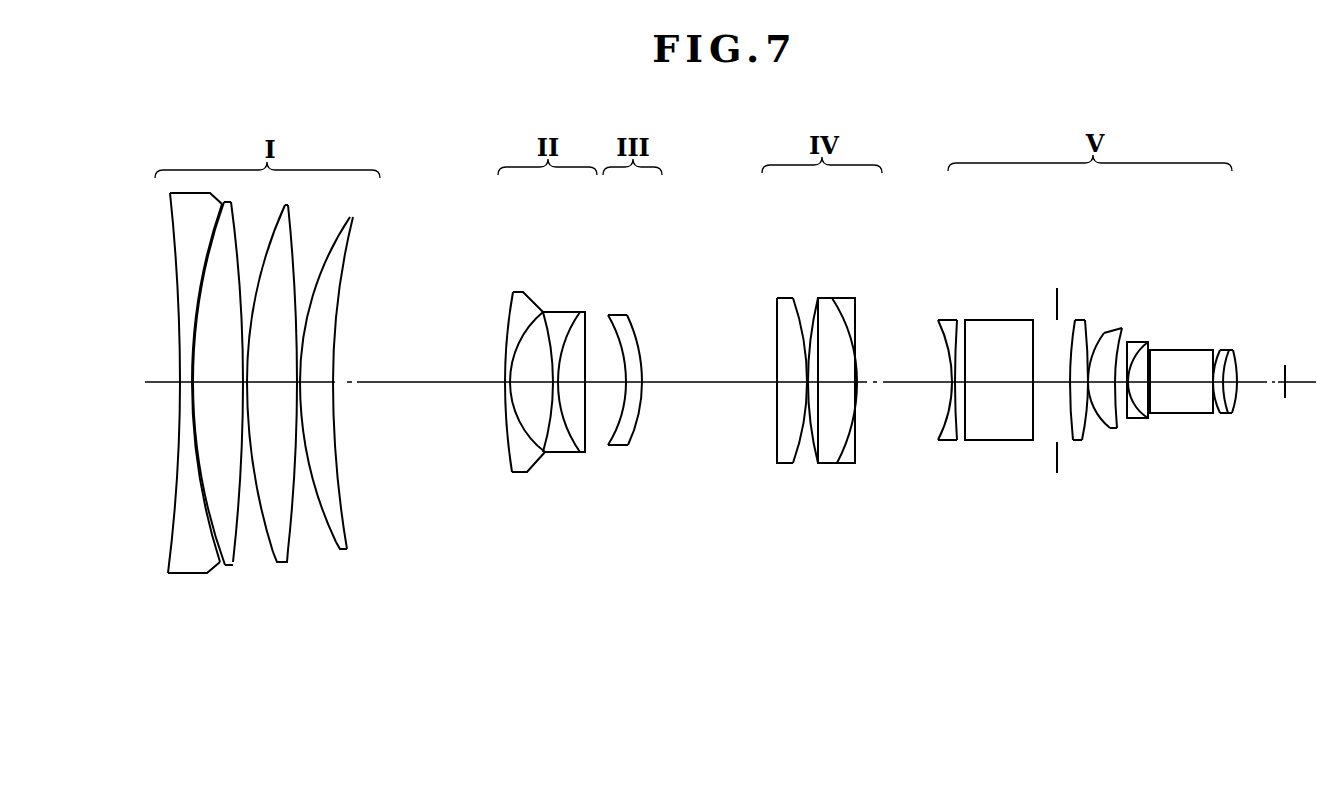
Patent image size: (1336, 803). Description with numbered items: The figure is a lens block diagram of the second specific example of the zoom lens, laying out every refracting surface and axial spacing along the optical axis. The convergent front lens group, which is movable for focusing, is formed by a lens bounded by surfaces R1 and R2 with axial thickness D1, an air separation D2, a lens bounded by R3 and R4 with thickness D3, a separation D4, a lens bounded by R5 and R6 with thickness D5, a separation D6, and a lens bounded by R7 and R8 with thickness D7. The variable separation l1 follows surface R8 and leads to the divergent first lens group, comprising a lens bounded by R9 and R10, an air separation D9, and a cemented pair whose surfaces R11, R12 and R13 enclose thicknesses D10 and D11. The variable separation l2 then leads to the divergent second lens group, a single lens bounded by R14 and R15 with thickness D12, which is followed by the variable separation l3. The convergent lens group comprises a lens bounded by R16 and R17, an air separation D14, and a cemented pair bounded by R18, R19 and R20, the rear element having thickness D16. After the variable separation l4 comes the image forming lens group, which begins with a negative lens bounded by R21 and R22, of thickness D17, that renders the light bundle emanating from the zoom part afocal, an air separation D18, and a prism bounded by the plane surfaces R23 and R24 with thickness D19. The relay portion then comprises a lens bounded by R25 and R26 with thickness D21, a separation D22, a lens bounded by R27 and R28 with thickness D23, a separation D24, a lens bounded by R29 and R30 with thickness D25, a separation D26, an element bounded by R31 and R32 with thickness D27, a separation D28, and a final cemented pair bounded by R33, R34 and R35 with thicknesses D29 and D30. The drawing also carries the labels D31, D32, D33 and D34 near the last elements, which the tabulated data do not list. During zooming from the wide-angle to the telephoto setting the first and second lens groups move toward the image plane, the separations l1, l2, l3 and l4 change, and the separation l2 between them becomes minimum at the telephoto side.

The lens surface R1 is at (168, 560).
The lens surface R2 is at (220, 562).
The lens surface R3 is at (226, 567).
The lens surface R4 is at (235, 565).
The lens surface R5 is at (275, 556).
The lens surface R6 is at (289, 556).
The lens surface R7 is at (337, 544).
The lens surface R8 is at (348, 551).
The lens surface R9 is at (511, 470).
The lens surface R10 is at (533, 470).
The lens surface R11 is at (548, 455).
The lens surface R12 is at (573, 455).
The lens surface R13 is at (586, 455).
The lens surface R14 is at (609, 447).
The lens surface R15 is at (637, 445).
The lens surface R16 is at (776, 462).
The lens surface R17 is at (795, 465).
The lens surface R18 is at (818, 465).
The lens surface R19 is at (838, 465).
The lens surface R20 is at (856, 465).
The negative lens surface R21 is at (937, 442).
The negative lens surface R22 is at (957, 442).
The prism surface R23 is at (966, 442).
The prism surface R24 is at (1032, 442).
The lens surface R25 is at (1072, 442).
The lens surface R26 is at (1083, 443).
The lens surface R27 is at (1110, 430).
The lens surface R28 is at (1124, 430).
The lens surface R29 is at (1140, 420).
The lens surface R30 is at (1150, 420).
The surface R31 is at (1156, 418).
The surface R32 is at (1216, 415).
The lens surface R33 is at (1226, 415).
The lens surface R34 is at (1234, 416).
The lens surface R35 is at (1240, 400).
The axial thickness D1 is at (186, 379).
The axial separation D2 is at (201, 372).
The axial thickness D3 is at (219, 372).
The axial separation D4 is at (251, 372).
The axial thickness D5 is at (269, 372).
The axial separation D6 is at (303, 372).
The axial thickness D7 is at (317, 372).
The axial separation D9 is at (506, 378).
The axial thickness D10 is at (534, 370).
The axial thickness D11 is at (556, 376).
The axial thickness D12 is at (572, 370).
The axial separation D14 is at (638, 378).
The axial thickness D16 is at (793, 370).
The axial thickness D17 is at (810, 376).
The axial separation D18 is at (831, 370).
The axial thickness D19 is at (861, 377).
The axial thickness D21 is at (952, 378).
The axial separation D22 is at (960, 380).
The axial thickness D23 is at (1003, 370).
The axial separation D24 is at (1052, 370).
The axial thickness D25 is at (1079, 345).
The axial separation D26 is at (1096, 335).
The axial thickness D27 is at (1110, 340).
The axial separation D28 is at (1123, 345).
The axial thickness D29 is at (1135, 360).
The axial thickness D30 is at (1153, 350).
The axial thickness/spacing 31 D31 is at (1182, 370).
The axial thickness/spacing 32 D32 is at (1216, 352).
The axial thickness/spacing 33 D33 is at (1226, 350).
The axial thickness/spacing 34 D34 is at (1240, 352).
The variable air separation l1 is at (428, 388).
The variable air separation l2 is at (606, 388).
The variable air separation l3 is at (718, 388).
The variable air separation l4 is at (907, 388).